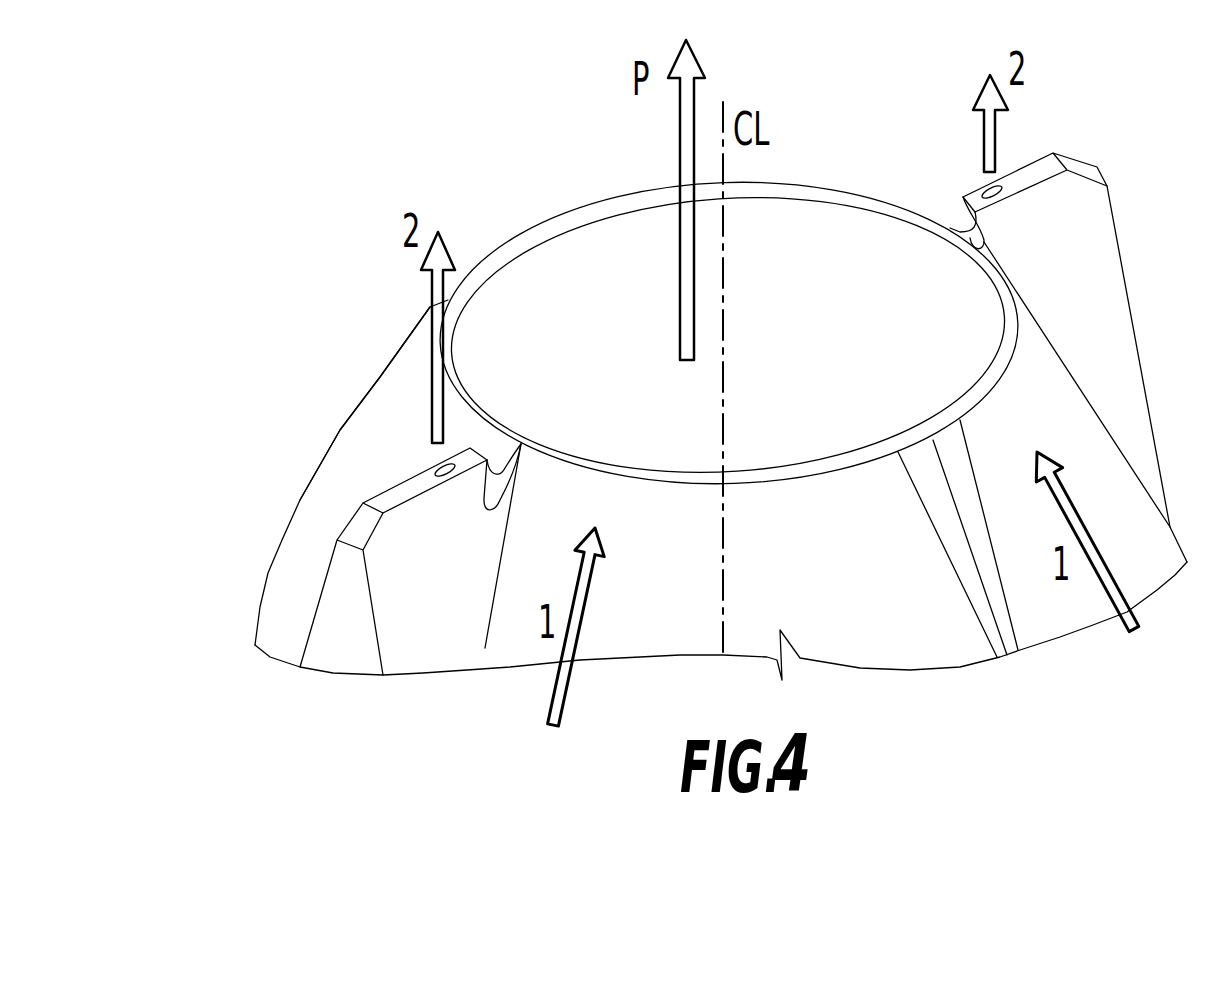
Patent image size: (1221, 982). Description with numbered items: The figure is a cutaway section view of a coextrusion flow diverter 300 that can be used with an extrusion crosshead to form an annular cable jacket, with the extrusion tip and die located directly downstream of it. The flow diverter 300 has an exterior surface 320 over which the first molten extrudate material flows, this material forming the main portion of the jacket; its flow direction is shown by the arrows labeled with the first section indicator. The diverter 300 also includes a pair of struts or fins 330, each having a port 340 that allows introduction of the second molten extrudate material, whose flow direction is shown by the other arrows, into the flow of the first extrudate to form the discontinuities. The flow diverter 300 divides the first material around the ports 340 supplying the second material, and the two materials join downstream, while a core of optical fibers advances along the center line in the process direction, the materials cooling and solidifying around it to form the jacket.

The coextrusion flow diverter 300 is at (253, 577).
The exterior surface 320 is at (398, 390).
The struts or fins 330 is at (343, 578).
The port 340 is at (438, 467).